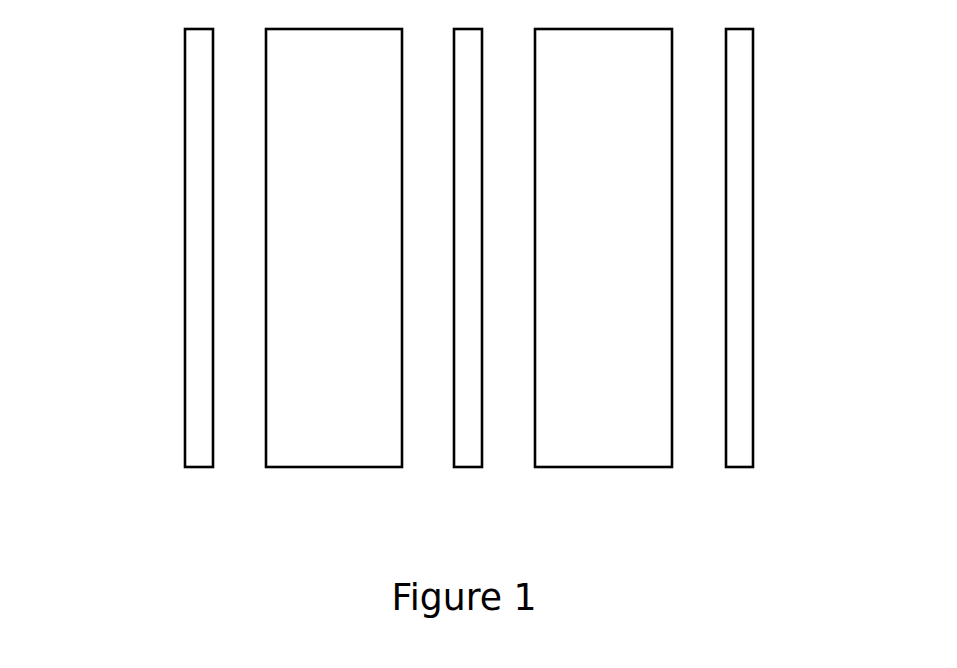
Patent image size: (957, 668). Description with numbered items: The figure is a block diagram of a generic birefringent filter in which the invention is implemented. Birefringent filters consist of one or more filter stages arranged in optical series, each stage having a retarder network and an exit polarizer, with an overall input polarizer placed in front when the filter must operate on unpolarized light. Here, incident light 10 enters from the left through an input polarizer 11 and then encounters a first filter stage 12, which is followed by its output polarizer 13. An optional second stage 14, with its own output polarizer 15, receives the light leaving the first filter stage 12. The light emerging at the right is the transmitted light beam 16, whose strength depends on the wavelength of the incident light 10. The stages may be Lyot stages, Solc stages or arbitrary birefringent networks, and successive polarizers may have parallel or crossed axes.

The incident light 10 is at (148, 260).
The input polarizer 11 is at (201, 279).
The first filter stage 12 is at (334, 279).
The output polarizer 13 is at (466, 279).
The second stage 14 is at (603, 279).
The output polarizer 15 is at (742, 279).
The transmitted light beam 16 is at (782, 246).